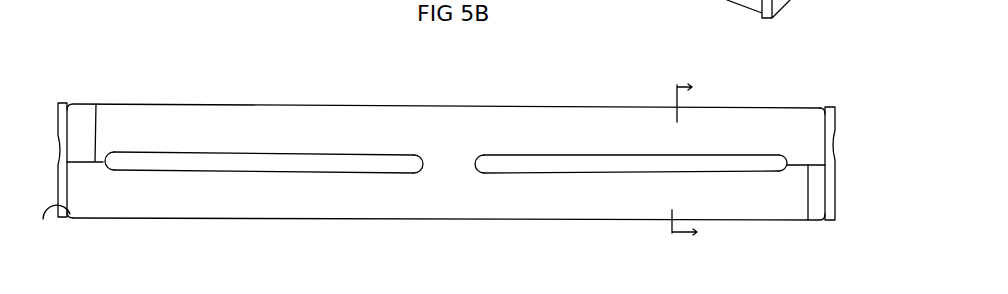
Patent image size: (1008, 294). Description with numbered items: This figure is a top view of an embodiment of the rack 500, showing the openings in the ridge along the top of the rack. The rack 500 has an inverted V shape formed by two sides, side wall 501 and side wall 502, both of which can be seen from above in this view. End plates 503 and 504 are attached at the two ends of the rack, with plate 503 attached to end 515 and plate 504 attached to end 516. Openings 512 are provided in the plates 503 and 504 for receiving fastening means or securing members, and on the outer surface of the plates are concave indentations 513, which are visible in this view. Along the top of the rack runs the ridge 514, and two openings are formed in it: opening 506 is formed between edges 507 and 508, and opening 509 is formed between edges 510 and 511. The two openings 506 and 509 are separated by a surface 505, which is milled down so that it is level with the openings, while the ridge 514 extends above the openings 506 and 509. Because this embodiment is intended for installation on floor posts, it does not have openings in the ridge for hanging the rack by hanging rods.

The rack 500 is at (318, 88).
The side 501 is at (290, 202).
The side 502 is at (560, 125).
The end plate 503 is at (835, 200).
The end plate 504 is at (46, 228).
The surface 505 is at (450, 168).
The opening 506 is at (633, 162).
The edge 507 is at (478, 167).
The edge 508 is at (780, 160).
The opening 509 is at (200, 165).
The edge 510 is at (110, 167).
The edge 511 is at (420, 161).
The openings 512 is at (757, 5).
The concave indentations 513 is at (57, 157).
The ridge 514 is at (96, 104).
The end 515 is at (823, 130).
The end 516 is at (78, 217).